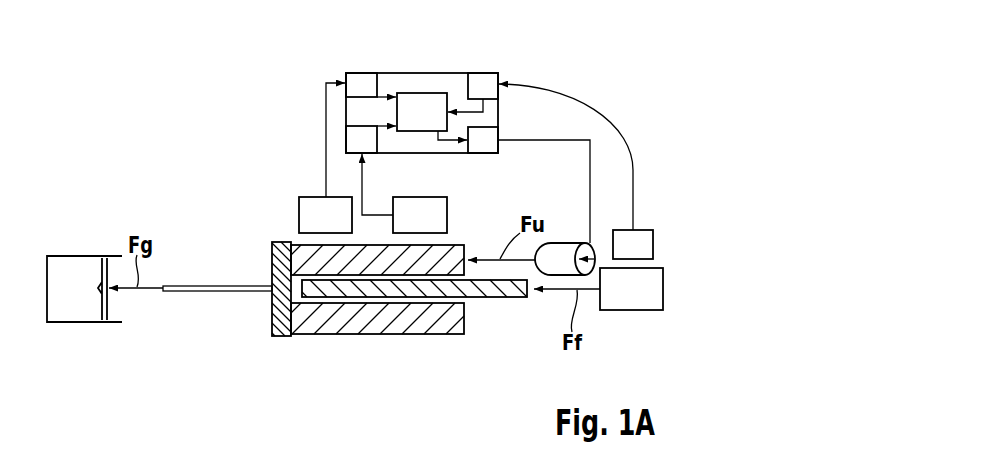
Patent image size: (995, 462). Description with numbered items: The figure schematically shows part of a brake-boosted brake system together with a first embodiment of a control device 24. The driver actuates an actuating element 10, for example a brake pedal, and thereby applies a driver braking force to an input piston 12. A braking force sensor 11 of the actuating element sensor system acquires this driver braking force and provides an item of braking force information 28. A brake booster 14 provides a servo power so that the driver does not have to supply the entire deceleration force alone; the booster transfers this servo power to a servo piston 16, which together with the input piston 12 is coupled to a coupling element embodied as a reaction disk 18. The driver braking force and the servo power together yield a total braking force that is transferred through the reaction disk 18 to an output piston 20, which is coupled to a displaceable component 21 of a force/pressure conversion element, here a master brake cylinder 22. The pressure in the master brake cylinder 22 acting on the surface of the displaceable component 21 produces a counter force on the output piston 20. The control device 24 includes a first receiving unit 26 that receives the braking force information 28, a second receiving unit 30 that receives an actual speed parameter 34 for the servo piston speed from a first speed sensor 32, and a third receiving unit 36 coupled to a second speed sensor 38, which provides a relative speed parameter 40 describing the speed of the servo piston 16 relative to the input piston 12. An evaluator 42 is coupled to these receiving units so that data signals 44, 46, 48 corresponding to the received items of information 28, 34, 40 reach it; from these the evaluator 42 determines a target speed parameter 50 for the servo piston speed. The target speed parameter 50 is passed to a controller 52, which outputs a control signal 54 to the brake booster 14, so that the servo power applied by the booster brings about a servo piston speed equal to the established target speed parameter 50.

The actuating element 10 is at (638, 310).
The braking force sensor 11 is at (653, 244).
The input piston 12 is at (524, 298).
The brake booster 14 is at (566, 253).
The servo piston 16 is at (442, 325).
The reaction disk 18 is at (282, 337).
The output piston 20 is at (210, 292).
The displaceable component 21 is at (108, 307).
The master brake cylinder 22 is at (72, 323).
The control device 24 is at (490, 155).
The first receiving unit 26 is at (482, 76).
The braking force information 28 is at (610, 124).
The second receiving unit 30 is at (356, 76).
The first speed sensor 32 is at (299, 207).
The actual speed parameter 34 is at (326, 115).
The third receiving unit 36 is at (352, 142).
The second speed sensor 38 is at (447, 215).
The relative speed parameter 40 is at (362, 180).
The evaluator 42 is at (427, 92).
The data signal 44 is at (455, 110).
The data signal 46 is at (382, 96).
The data signal 48 is at (380, 128).
The target speed parameter 50 is at (440, 141).
The controller 52 is at (490, 132).
The control signal 54 is at (590, 162).